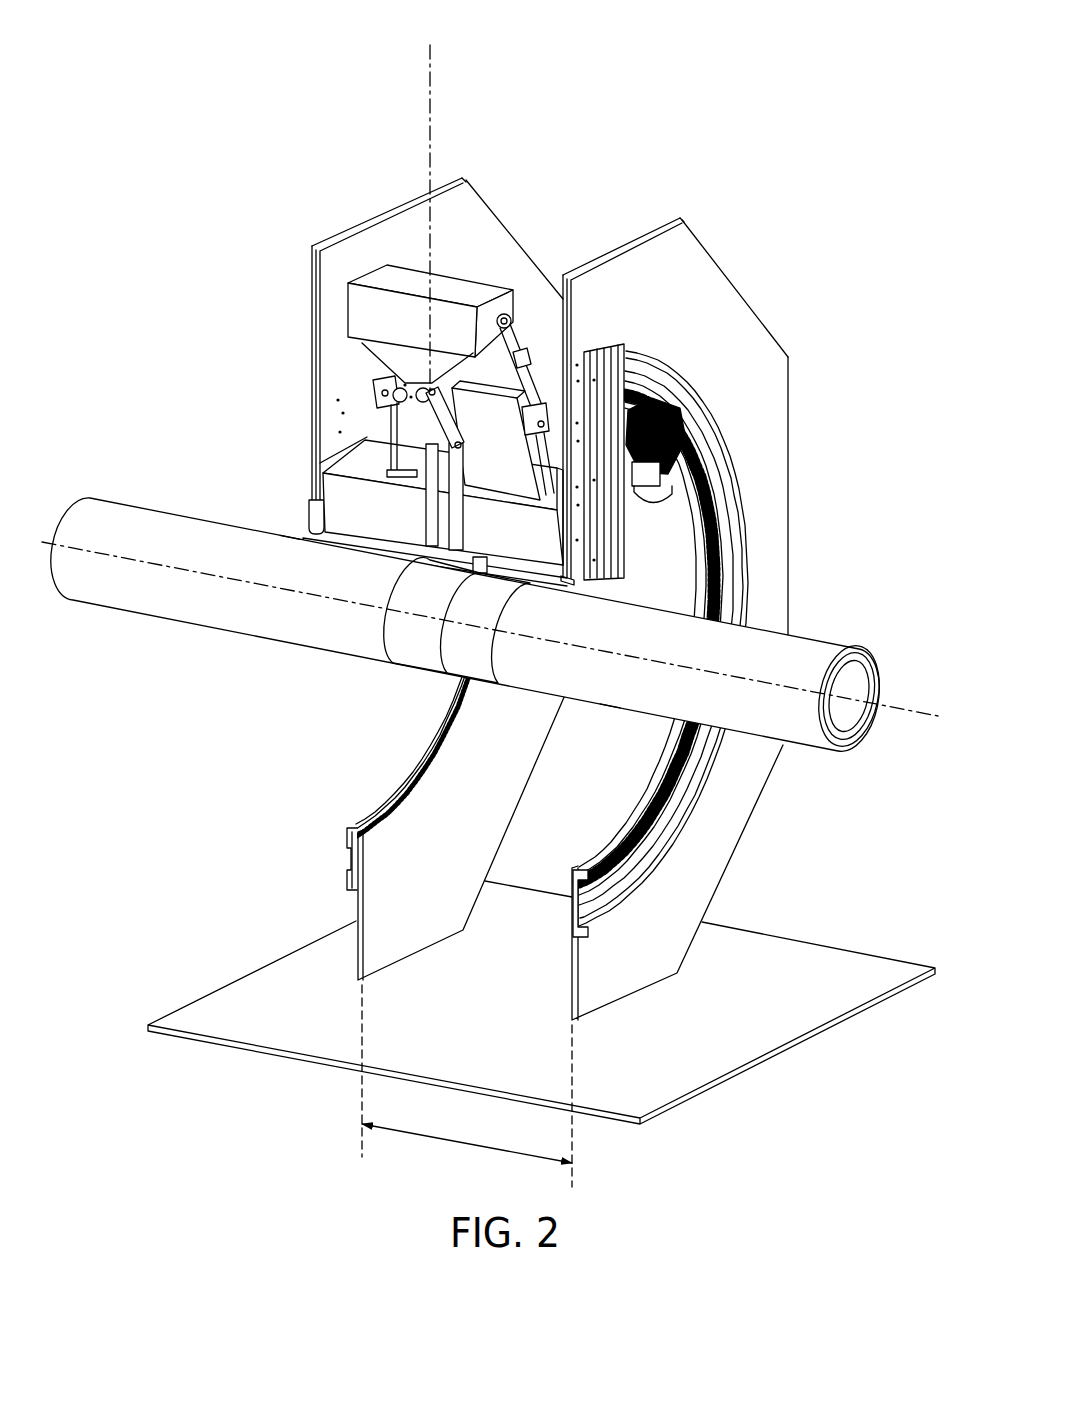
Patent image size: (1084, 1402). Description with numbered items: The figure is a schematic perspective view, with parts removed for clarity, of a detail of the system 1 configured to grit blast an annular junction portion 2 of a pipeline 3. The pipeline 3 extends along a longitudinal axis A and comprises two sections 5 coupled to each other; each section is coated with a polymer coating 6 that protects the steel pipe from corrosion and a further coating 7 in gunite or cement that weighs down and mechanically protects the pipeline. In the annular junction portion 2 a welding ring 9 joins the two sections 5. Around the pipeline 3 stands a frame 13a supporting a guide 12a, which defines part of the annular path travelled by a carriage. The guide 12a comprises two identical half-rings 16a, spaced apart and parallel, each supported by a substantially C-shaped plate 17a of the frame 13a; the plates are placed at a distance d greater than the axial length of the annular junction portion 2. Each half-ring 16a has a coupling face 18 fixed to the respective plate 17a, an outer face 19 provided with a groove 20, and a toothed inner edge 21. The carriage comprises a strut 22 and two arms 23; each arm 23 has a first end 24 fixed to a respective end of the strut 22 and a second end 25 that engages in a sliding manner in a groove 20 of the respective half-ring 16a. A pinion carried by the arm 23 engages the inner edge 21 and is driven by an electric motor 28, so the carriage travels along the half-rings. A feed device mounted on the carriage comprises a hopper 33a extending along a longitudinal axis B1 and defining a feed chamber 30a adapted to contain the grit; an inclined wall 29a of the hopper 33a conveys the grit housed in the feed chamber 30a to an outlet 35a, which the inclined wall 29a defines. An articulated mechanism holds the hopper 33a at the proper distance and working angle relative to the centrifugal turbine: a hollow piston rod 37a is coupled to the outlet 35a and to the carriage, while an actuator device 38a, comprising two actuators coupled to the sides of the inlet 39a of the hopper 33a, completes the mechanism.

The system 1 is at (243, 100).
The annular junction portion 2 is at (420, 680).
The pipeline 3 is at (812, 640).
The sections 5 is at (287, 623).
The polymer coating 6 is at (842, 748).
The further coating 7 is at (860, 740).
The welding ring 9 is at (405, 655).
The guide 12a is at (648, 142).
The frame 13a is at (397, 158).
The half-ring 16a is at (707, 382).
The plate 17a is at (470, 205).
The coupling face 18 is at (571, 905).
The outer face 19 is at (662, 871).
The groove 20 is at (340, 872).
The toothed inner edge 21 is at (397, 797).
The strut 22 is at (337, 490).
The arm 23 is at (312, 338).
The first end 24 is at (302, 517).
The second end 25 is at (306, 318).
The electric motor 28 is at (655, 548).
The inclined wall 29a is at (410, 365).
The feed chamber 30a is at (377, 367).
The hopper 33a is at (470, 281).
The outlet 35a is at (397, 390).
The piston rod 37a is at (430, 427).
The actuator device 38a is at (383, 278).
The inlet 39a is at (410, 270).
The longitudinal axis A is at (900, 703).
The longitudinal axis B1 is at (432, 48).
The distance d is at (467, 1143).